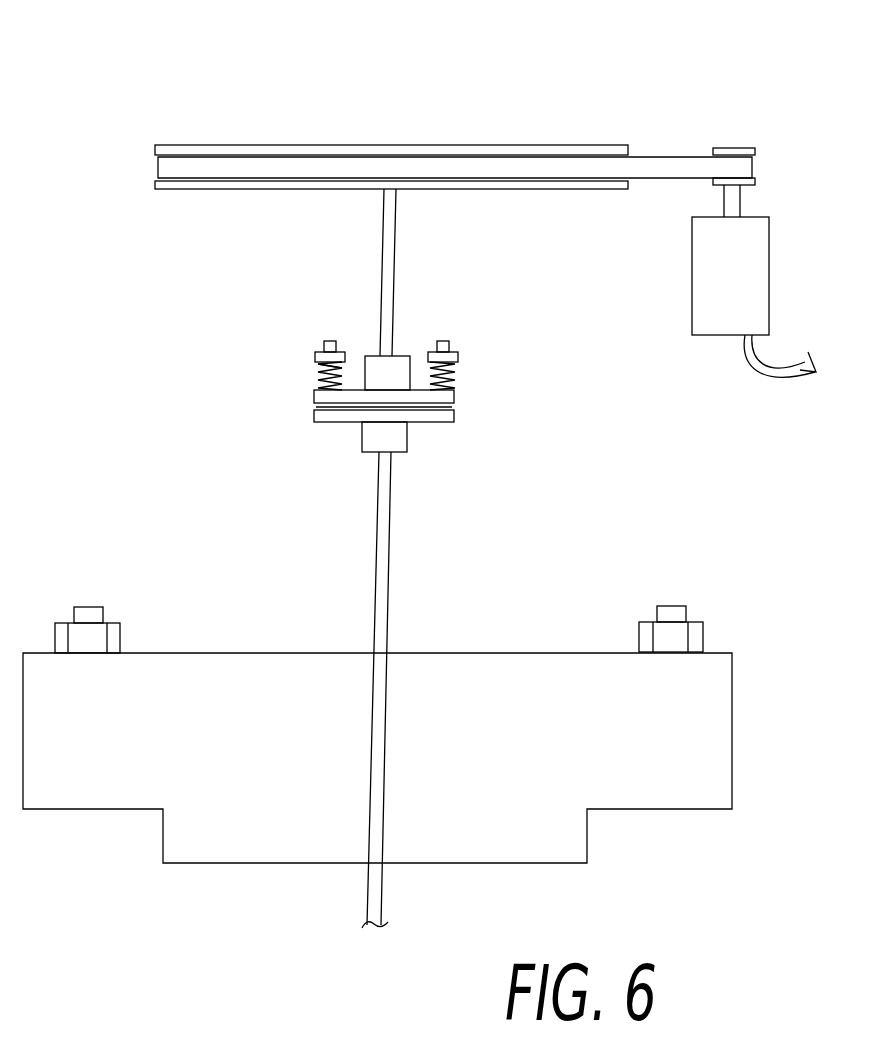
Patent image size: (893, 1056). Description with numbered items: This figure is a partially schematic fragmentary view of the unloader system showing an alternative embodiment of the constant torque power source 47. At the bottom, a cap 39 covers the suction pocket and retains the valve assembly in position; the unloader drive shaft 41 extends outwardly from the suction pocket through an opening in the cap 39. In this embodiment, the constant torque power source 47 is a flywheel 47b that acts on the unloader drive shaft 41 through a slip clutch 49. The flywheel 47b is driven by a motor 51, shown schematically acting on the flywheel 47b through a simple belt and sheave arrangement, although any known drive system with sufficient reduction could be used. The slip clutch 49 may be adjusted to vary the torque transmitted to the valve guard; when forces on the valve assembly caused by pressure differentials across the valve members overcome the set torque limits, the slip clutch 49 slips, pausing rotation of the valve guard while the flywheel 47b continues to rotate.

The constant torque power source 47 is at (182, 77).
The flywheel 47b is at (490, 140).
The motor 51 is at (692, 270).
The slip clutch 49 is at (456, 397).
The unloader drive shaft 41 is at (388, 556).
The cap 39 is at (575, 648).